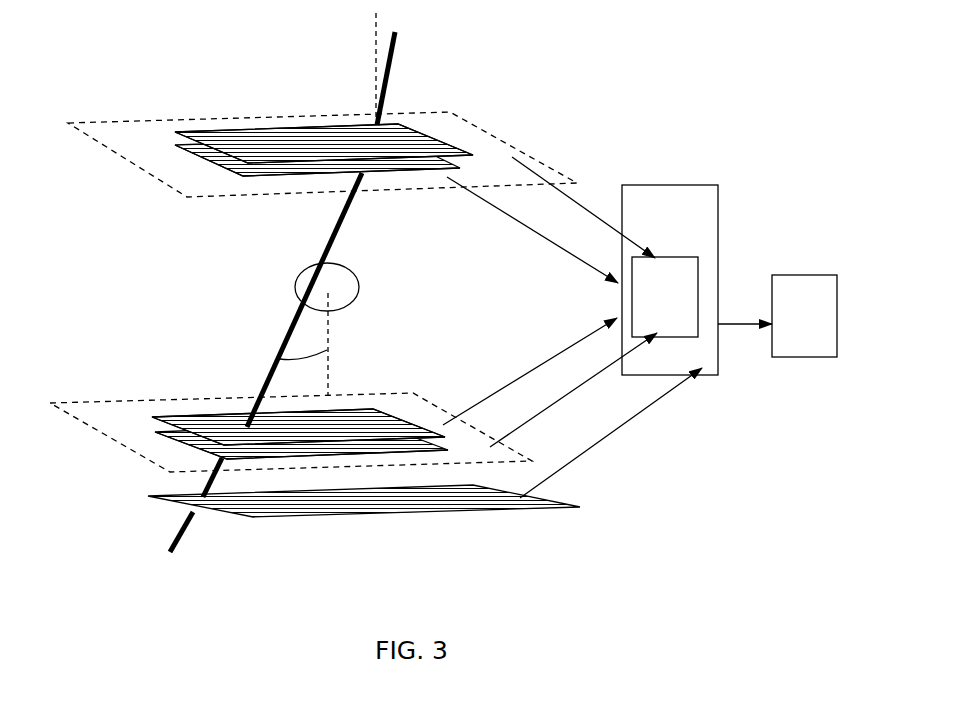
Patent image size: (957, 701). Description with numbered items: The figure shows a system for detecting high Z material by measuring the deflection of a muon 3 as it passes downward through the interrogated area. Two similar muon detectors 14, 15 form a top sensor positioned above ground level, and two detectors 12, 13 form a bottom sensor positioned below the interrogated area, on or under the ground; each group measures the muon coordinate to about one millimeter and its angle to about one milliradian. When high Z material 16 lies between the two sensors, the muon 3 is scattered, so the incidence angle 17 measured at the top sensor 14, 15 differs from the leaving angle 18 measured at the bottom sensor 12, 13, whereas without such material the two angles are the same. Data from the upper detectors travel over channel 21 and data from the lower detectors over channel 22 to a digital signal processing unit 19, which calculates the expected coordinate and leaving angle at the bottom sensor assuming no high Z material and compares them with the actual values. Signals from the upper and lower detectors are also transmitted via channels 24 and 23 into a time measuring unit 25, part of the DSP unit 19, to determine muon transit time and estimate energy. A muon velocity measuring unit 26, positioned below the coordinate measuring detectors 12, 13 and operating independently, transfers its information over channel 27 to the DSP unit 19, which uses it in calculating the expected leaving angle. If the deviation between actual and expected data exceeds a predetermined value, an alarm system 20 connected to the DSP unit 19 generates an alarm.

The muon 3 is at (296, 291).
The lower muon detector 12 is at (291, 421).
The lower muon detector 13 is at (301, 451).
The upper muon detector 14 is at (322, 153).
The upper muon detector 15 is at (317, 168).
The high Z material 16 is at (350, 287).
The incidence angle 17 is at (360, 65).
The leaving angle 18 is at (304, 344).
The digital signal processing unit 19 is at (697, 280).
The alarm system 20 is at (804, 316).
The signal channel from upper detector 21 is at (532, 230).
The signal channel from lower detector 22 is at (530, 371).
The channel 23 is at (573, 390).
The channel 24 is at (583, 207).
The time measuring unit 25 is at (665, 297).
The muon velocity measuring unit 26 is at (364, 515).
The velocity data channel 27 is at (611, 433).